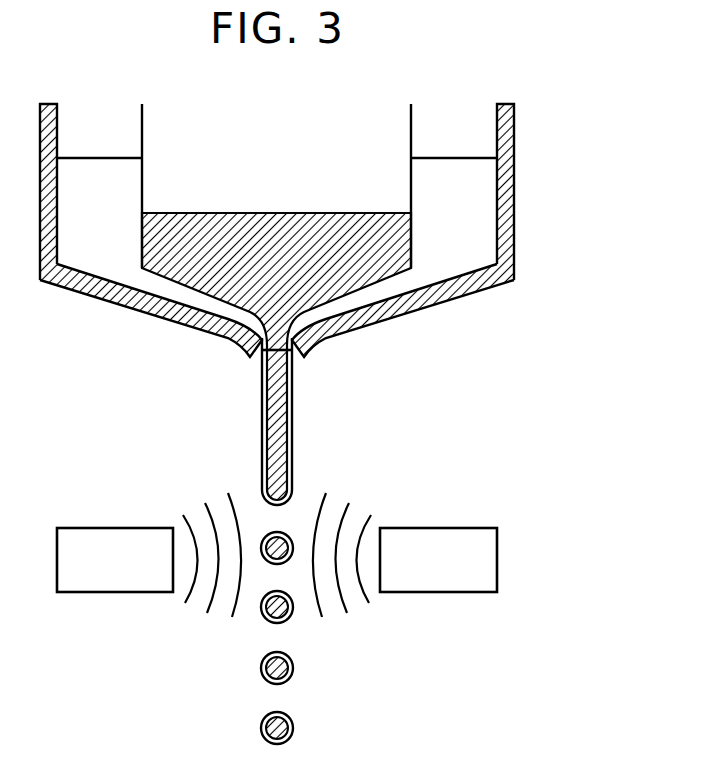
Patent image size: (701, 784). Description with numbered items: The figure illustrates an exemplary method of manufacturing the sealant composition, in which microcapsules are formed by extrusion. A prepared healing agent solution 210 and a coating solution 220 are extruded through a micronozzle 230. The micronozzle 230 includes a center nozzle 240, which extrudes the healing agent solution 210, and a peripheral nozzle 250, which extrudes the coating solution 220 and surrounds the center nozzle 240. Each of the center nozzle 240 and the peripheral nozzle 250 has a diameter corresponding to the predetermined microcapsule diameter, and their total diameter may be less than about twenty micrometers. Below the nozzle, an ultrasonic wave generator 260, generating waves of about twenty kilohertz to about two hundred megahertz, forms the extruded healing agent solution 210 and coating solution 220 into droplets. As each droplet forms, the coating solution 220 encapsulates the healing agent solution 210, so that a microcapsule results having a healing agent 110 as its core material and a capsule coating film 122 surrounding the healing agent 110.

The healing agent 110 is at (293, 728).
The capsule coating film 122 is at (286, 716).
The healing agent solution 210 is at (383, 263).
The coating solution 220 is at (480, 227).
The micronozzle 230 is at (322, 347).
The center nozzle 240 is at (248, 353).
The peripheral nozzle 250 is at (213, 317).
The ultrasonic wave generator 260 is at (480, 560).